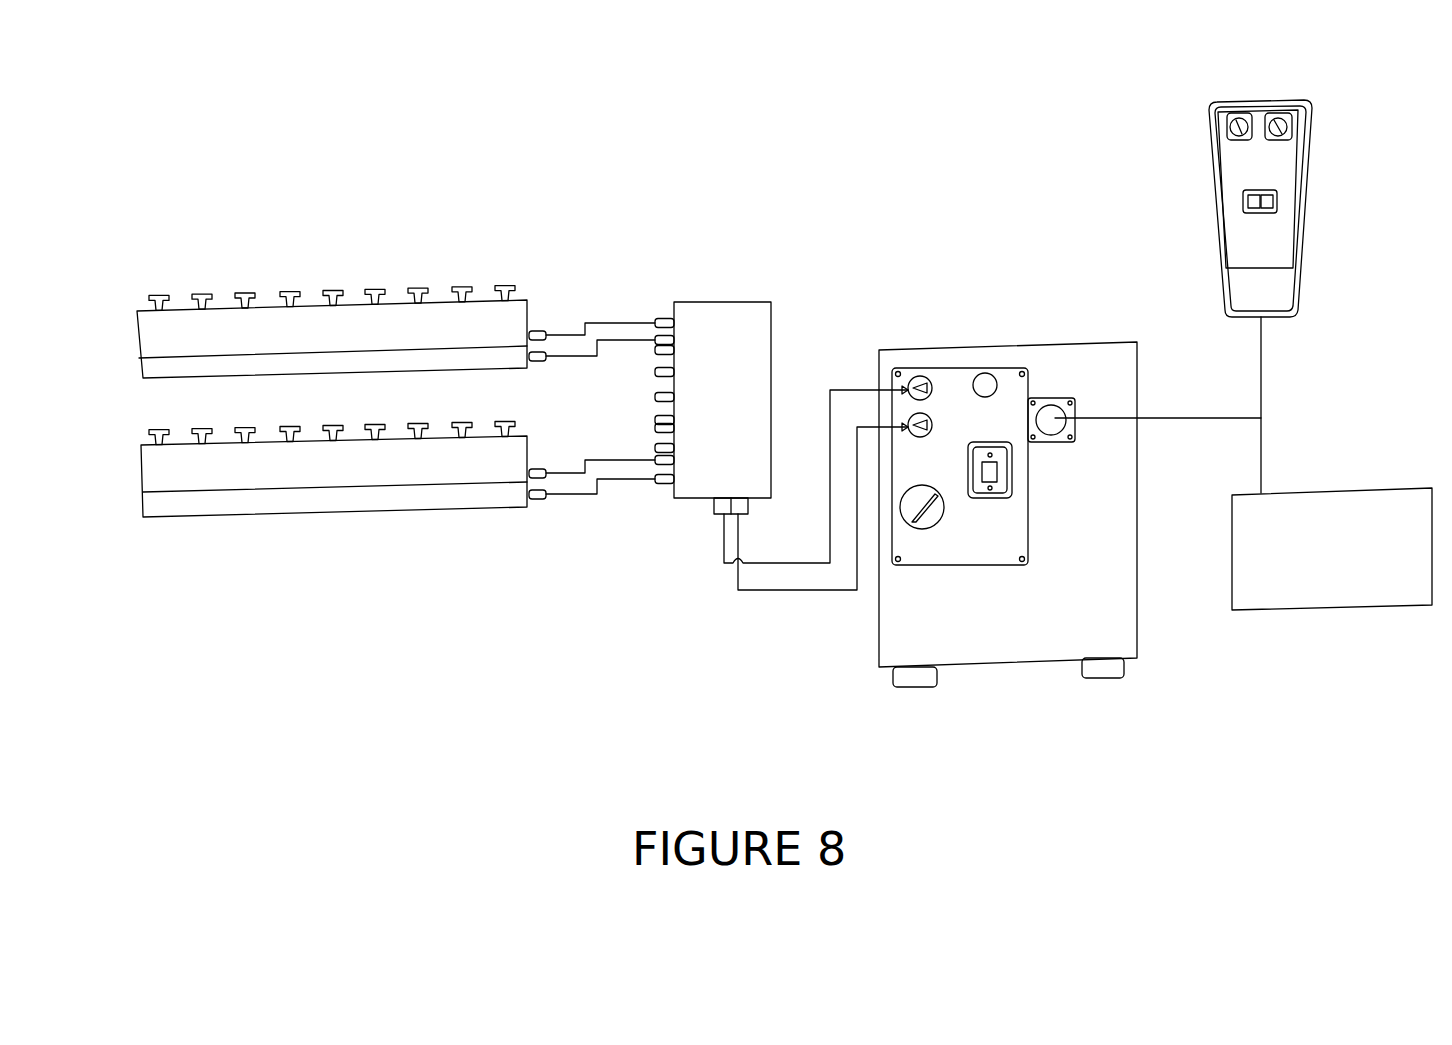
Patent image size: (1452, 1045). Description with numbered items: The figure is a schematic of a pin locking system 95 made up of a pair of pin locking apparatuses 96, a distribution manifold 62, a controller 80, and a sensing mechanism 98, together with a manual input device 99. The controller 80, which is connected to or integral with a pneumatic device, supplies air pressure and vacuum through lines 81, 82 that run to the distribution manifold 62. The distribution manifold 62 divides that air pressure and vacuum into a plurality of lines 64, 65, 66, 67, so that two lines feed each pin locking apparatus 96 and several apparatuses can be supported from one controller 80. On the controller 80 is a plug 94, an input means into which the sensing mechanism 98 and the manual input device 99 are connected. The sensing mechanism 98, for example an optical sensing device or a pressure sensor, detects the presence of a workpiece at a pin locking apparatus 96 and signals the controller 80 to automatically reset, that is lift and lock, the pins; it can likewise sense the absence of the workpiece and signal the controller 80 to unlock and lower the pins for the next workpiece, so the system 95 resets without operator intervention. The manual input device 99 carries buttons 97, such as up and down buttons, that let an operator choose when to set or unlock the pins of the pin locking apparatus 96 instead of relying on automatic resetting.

The pin locking system 95 is at (875, 148).
The pin locking apparatus 96 is at (348, 316).
The line 64 is at (598, 322).
The line 65 is at (597, 345).
The line 66 is at (605, 460).
The line 67 is at (620, 482).
The distribution manifold 62 is at (724, 335).
The cable 81 is at (785, 563).
The line 82 is at (793, 593).
The controller 80 is at (1048, 362).
The plug 94 is at (1060, 418).
The buttons 97 is at (1240, 117).
The manual input device 99 is at (1278, 238).
The sensing mechanism 98 is at (1287, 580).